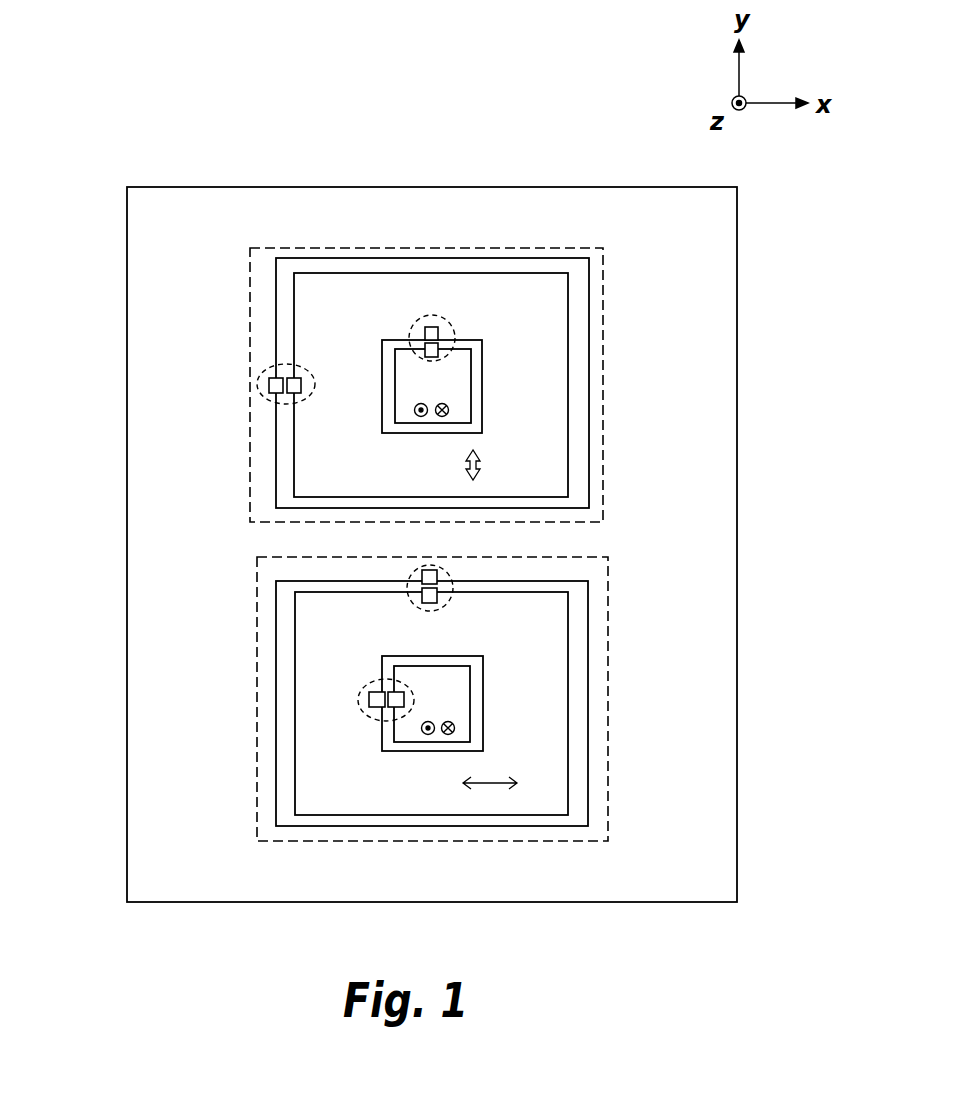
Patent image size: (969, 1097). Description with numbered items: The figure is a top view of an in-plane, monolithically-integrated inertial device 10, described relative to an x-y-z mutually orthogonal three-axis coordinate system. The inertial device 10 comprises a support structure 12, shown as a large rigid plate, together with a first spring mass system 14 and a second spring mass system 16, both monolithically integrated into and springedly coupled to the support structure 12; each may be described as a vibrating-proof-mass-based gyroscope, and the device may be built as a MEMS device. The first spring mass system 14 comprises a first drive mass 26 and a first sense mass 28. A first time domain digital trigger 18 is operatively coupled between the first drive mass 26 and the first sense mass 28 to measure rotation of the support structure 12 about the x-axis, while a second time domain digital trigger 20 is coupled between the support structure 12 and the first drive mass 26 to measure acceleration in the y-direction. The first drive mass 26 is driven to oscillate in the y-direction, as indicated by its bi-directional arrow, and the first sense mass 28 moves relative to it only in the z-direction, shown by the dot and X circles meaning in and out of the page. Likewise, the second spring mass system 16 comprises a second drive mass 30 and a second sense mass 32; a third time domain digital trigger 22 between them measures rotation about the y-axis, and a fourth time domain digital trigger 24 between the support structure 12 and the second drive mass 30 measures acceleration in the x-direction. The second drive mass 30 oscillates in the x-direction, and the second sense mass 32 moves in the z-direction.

The inertial device 10 is at (134, 101).
The support structure 12 is at (408, 187).
The first spring mass system 14 is at (603, 375).
The second spring mass system 16 is at (609, 631).
The first time domain digital trigger 18 is at (450, 323).
The second time domain digital trigger 20 is at (315, 375).
The third time domain digital trigger 22 is at (367, 682).
The fourth time domain digital trigger 24 is at (441, 605).
The first drive mass 26 is at (450, 476).
The first sense mass 28 is at (448, 395).
The second drive mass 30 is at (447, 798).
The second sense mass 32 is at (453, 713).